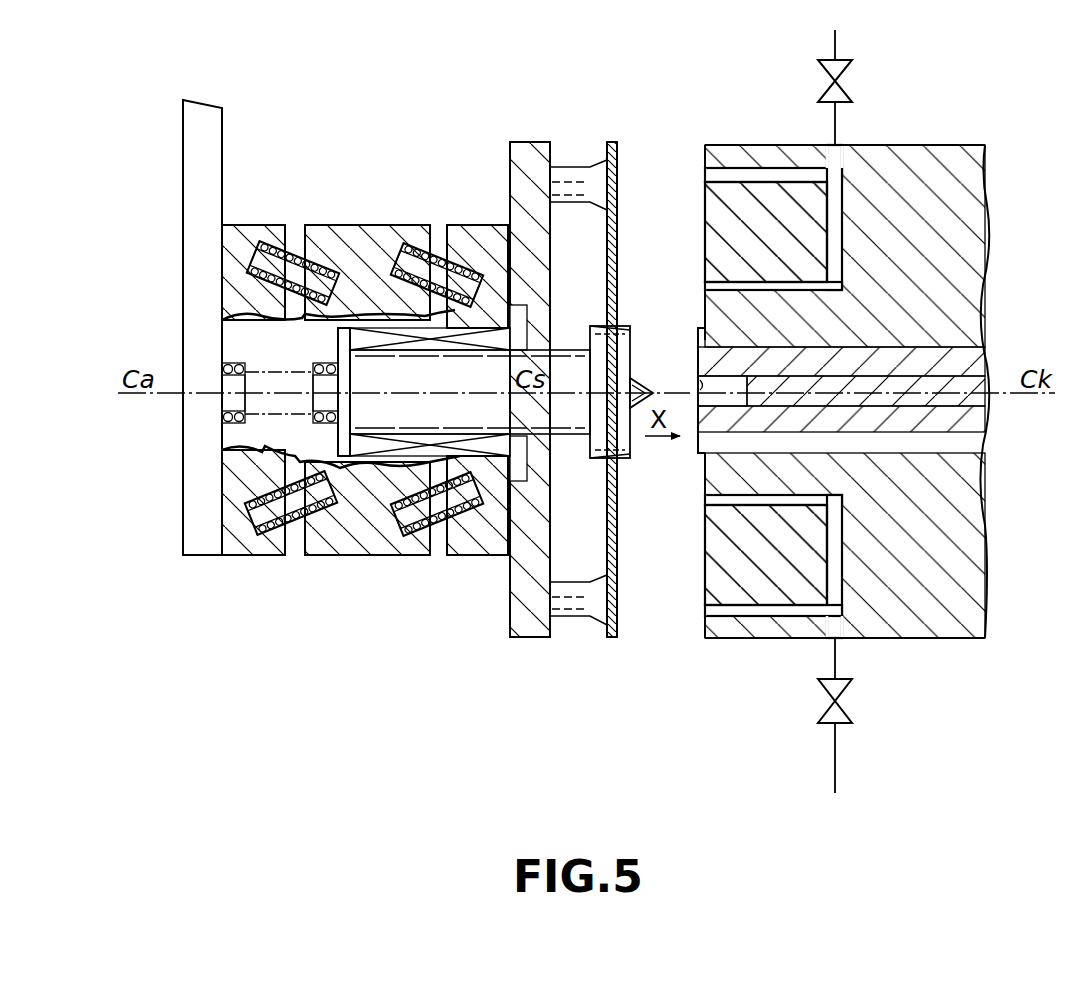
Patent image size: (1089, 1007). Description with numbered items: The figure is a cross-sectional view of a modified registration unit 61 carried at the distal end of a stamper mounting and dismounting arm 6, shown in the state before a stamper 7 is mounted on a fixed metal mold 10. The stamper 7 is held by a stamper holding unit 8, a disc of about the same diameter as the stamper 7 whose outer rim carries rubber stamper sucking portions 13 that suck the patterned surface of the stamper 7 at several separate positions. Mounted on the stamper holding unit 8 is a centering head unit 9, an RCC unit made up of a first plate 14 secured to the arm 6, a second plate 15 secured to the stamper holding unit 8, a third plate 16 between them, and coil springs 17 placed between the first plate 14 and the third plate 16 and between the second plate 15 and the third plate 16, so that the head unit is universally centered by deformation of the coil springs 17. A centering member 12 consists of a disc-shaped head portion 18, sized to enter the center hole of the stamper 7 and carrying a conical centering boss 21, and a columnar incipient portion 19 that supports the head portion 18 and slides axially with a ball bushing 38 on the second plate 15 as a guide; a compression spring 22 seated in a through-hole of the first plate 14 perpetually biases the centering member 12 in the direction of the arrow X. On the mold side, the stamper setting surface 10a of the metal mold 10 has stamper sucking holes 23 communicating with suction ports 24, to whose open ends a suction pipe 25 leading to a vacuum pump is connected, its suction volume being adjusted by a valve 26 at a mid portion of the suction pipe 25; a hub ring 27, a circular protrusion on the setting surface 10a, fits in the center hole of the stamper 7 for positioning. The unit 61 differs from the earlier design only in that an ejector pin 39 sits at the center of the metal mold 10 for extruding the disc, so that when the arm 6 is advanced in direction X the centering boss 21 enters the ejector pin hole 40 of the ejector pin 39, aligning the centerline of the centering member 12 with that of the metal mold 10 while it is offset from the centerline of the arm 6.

The stamper mounting and dismounting arm 6 is at (191, 290).
The stamper 7 is at (612, 640).
The stamper holding unit 8 is at (522, 628).
The centering head unit 9 is at (495, 75).
The metal mold 10 is at (856, 404).
The stamper setting surface 10a is at (703, 203).
The centering member 12 is at (567, 330).
The stamper sucking portions 13 is at (574, 176).
The first plate 14 is at (260, 224).
The second plate 15 is at (472, 224).
The third plate 16 is at (409, 224).
The coil springs 17 is at (410, 247).
The head portion 18 is at (596, 452).
The incipient portion 19 is at (380, 415).
The centering boss 21 is at (640, 392).
The compression spring 22 is at (245, 452).
The stamper sucking holes 23 is at (762, 502).
The suction ports 24 is at (824, 569).
The suction pipe 25 is at (832, 125).
The valve 26 is at (852, 63).
The hub ring 27 is at (700, 453).
The ball bushing 38 is at (495, 444).
The ejector pin 39 is at (925, 398).
The ejector pin hole 40 is at (700, 388).
The registration unit 61 is at (617, 712).